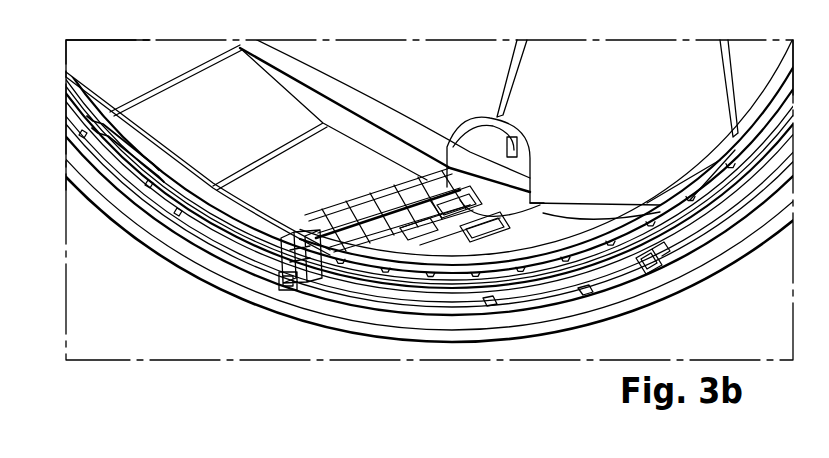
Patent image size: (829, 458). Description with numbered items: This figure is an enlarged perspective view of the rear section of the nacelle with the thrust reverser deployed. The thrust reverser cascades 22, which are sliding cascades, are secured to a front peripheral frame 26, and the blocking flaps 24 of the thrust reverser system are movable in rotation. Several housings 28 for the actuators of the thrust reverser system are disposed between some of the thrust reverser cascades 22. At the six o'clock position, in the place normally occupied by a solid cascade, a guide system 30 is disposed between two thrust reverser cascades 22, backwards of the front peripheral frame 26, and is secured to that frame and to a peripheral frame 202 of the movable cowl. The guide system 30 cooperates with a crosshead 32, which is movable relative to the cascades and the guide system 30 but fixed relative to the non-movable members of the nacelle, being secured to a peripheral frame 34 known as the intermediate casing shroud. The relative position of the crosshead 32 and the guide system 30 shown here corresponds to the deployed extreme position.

The thrust reverser cascades 22 is at (183, 120).
The peripheral frame 202 is at (312, 95).
The blocking flaps 24 is at (432, 92).
The front peripheral frame 26 is at (543, 320).
The housings 28 is at (650, 277).
The guide system 30 is at (362, 232).
The crosshead 32 is at (286, 275).
The peripheral frame 34 is at (155, 173).